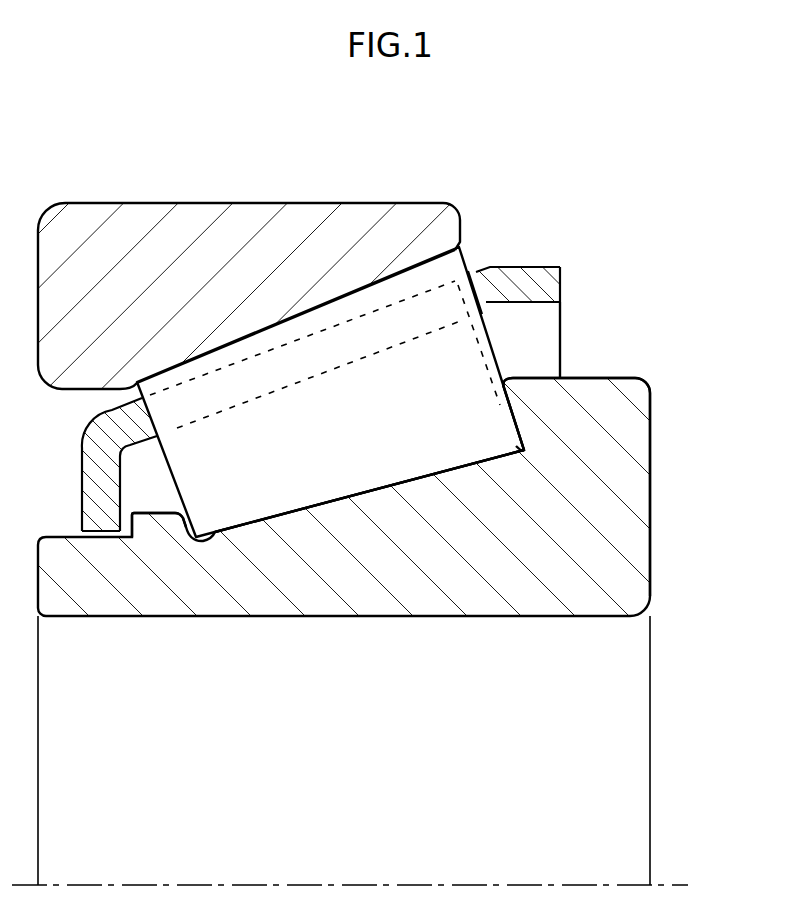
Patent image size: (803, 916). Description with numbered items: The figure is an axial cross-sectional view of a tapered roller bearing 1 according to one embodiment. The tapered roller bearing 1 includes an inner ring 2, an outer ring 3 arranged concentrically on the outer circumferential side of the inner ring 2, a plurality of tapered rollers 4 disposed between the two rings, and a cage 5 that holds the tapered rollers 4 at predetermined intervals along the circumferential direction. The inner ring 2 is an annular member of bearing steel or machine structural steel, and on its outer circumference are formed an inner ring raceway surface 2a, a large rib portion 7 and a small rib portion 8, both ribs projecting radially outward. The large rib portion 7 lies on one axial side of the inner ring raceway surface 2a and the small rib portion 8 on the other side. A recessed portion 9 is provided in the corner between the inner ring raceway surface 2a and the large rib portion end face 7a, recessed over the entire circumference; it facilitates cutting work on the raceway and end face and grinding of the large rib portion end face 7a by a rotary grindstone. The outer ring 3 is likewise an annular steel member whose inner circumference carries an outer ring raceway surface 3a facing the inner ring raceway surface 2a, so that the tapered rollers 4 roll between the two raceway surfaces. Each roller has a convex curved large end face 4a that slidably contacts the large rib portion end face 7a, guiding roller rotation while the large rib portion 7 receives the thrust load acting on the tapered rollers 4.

The tapered roller bearing 1 is at (552, 207).
The inner ring 2 is at (434, 617).
The inner ring raceway surface 2a is at (283, 513).
The outer ring 3 is at (248, 203).
The outer ring raceway surface 3a is at (330, 296).
The tapered roller 4 is at (257, 522).
The large end face 4a is at (494, 345).
The cage 5 is at (553, 283).
The large rib portion 7 is at (607, 403).
The large rib portion end face 7a is at (507, 403).
The small rib portion 8 is at (153, 530).
The recessed portion 9 is at (522, 448).